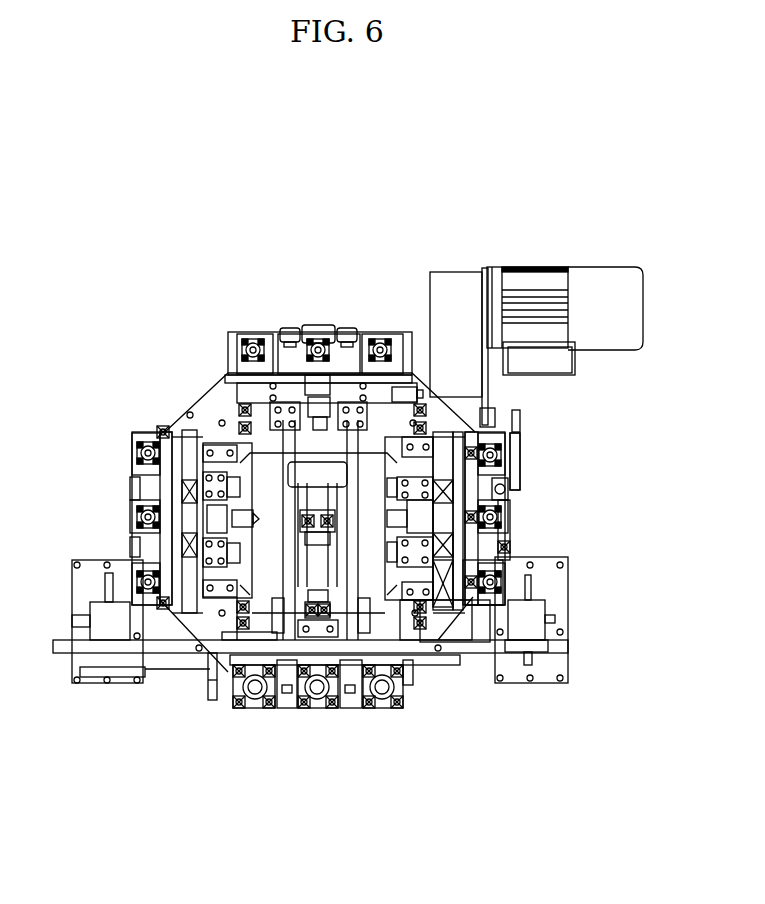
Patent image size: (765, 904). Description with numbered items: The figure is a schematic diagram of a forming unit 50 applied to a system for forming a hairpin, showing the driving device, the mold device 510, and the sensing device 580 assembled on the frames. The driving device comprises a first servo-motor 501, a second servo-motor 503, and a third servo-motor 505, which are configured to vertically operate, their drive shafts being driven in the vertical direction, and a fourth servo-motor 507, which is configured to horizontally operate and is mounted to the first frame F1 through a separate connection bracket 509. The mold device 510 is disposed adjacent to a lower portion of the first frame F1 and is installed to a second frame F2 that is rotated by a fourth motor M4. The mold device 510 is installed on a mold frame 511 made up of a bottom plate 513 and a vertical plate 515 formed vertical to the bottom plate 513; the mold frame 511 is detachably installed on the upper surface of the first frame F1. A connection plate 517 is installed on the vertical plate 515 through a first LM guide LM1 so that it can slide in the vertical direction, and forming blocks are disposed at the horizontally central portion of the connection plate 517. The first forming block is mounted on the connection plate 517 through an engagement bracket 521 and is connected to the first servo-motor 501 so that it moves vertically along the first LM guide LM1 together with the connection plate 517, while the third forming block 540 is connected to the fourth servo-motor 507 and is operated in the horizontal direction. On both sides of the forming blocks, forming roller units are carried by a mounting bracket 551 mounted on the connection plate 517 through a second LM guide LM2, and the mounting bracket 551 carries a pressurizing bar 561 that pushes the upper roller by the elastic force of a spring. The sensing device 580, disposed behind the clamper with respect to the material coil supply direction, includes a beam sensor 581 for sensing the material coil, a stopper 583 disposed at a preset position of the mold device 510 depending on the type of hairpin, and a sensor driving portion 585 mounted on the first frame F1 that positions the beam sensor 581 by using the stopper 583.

The forming unit 50 is at (174, 203).
The fourth servo-motor 507 is at (313, 497).
The connection bracket 509 is at (345, 470).
The mold device 510 is at (318, 312).
The mold frame 511 is at (581, 452).
The bottom plate 513 is at (480, 495).
The vertical plate 515 is at (498, 462).
The connection plate 517 is at (458, 547).
The engagement bracket 521 is at (160, 542).
The third forming block 540 is at (323, 633).
The mounting bracket 551 is at (492, 443).
The pressurizing bar 561 is at (132, 480).
The sensing device 580 is at (183, 693).
The beam sensor 581 is at (212, 700).
The stopper 583 is at (176, 425).
The sensor driving portion 585 is at (93, 678).
The first servo-motor 501 is at (317, 702).
The second servo-motor 503 is at (257, 702).
The third servo-motor 505 is at (383, 702).
The first frame F1 is at (542, 647).
The second frame F2 is at (432, 640).
The first LM guide LM1 is at (478, 593).
The second LM guide LM2 is at (480, 597).
The fourth motor M4 is at (532, 268).